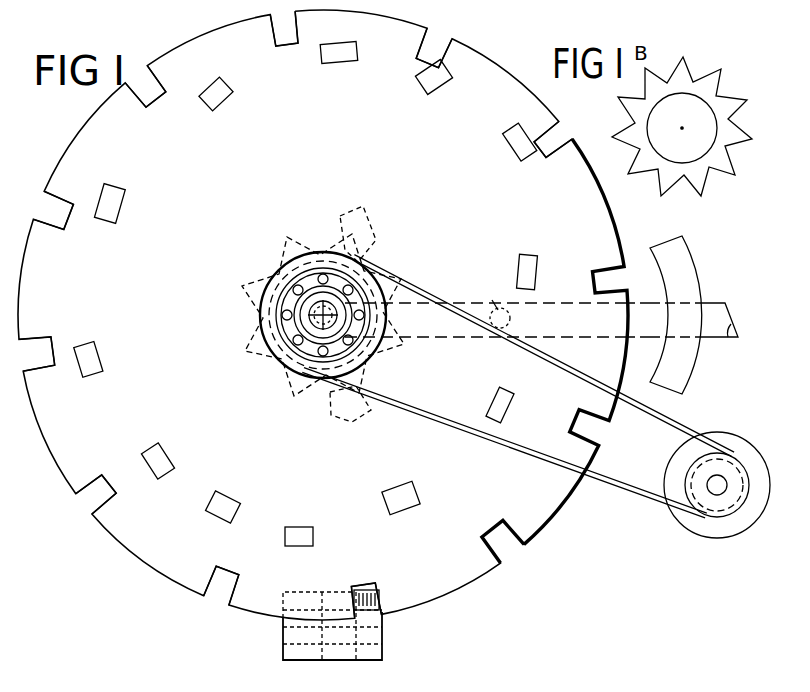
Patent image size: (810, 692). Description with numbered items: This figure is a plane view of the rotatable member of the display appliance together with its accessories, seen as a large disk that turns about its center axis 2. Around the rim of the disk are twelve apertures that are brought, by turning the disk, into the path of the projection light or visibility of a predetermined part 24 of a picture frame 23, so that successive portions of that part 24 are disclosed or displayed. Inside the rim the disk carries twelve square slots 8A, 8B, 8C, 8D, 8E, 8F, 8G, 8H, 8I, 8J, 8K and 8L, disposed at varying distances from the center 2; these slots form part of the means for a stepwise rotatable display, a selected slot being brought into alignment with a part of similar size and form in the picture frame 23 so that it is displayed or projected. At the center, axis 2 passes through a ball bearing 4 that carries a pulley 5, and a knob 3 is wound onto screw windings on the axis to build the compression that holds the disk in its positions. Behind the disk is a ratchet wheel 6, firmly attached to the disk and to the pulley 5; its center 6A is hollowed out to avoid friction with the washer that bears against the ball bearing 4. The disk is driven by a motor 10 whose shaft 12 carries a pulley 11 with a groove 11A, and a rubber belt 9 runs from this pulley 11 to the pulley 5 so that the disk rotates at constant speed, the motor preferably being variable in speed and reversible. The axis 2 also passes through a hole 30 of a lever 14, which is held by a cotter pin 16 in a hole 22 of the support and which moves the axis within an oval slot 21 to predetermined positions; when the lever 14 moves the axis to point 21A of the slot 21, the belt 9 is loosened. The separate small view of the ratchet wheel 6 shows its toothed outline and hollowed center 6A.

In FIG. 1, the center axis 2 is at (345, 322).
In FIG. 1, the knob 3 is at (300, 356).
In FIG. 1, the ball bearing 4 is at (286, 328).
In FIG. 1, the pulley 5 is at (265, 285).
In FIG. 1, the ratchet wheel 6 is at (282, 258).
In FIG. 1B, the ratchet wheel 6 is at (628, 103).
In FIG. 1B, the hollowed center of ratchet wheel 6A is at (690, 152).
In FIG. 1, the square slot 8A is at (517, 276).
In FIG. 1, the square slot 8B is at (494, 392).
In FIG. 1, the square slot 8C is at (392, 485).
In FIG. 1, the square slot 8D is at (316, 527).
In FIG. 1, the square slot 8E is at (229, 496).
In FIG. 1, the square slot 8F is at (165, 445).
In FIG. 1, the square slot 8G is at (97, 352).
In FIG. 1, the square slot 8H is at (116, 212).
In FIG. 1, the square slot 8I is at (221, 98).
In FIG. 1, the square slot 8J is at (322, 58).
In FIG. 1, the square slot 8K is at (418, 73).
In FIG. 1, the square slot 8L is at (507, 145).
In FIG. 1, the rubber belt 9 is at (545, 356).
In FIG. 1, the motor 10 is at (685, 454).
In FIG. 1, the pulley 11 is at (689, 470).
In FIG. 1, the groove 11A is at (694, 508).
In FIG. 1, the shaft 12 is at (730, 486).
In FIG. 1, the lever 14 is at (730, 340).
In FIG. 1, the cotter pin 16 is at (494, 300).
In FIG. 1, the oval slot 21 is at (344, 218).
In FIG. 1, the point in oval slot 21A is at (362, 412).
In FIG. 1, the hole 22 is at (512, 319).
In FIG. 1, the picture frame 23 is at (283, 636).
In FIG. 1, the predetermined part of picture frame 24 is at (289, 598).
In FIG. 1, the hole of lever 30 is at (523, 121).